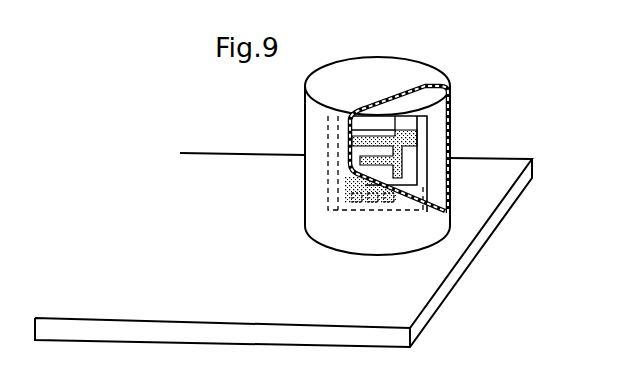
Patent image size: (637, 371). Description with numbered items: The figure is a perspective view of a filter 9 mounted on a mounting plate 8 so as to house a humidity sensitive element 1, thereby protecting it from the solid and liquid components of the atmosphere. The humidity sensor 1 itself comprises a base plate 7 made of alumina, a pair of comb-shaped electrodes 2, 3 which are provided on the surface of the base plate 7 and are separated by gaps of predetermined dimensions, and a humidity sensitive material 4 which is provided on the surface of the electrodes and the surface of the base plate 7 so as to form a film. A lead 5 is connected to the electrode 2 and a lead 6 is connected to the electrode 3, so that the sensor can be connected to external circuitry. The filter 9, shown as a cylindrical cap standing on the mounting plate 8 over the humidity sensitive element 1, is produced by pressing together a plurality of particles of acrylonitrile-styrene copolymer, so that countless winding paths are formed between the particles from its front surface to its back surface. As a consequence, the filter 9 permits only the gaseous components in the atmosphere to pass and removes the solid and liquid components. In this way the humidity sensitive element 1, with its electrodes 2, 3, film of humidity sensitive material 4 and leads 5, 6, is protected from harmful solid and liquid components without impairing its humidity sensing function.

The humidity sensor 1 is at (418, 116).
The comb-shaped electrode 2 is at (376, 131).
The comb-shaped electrode 3 is at (410, 165).
The humidity sensitive material 4 is at (417, 138).
The lead 5 is at (352, 223).
The lead 6 is at (408, 223).
The base plate 7 is at (399, 149).
The mounting plate 8 is at (420, 302).
The filter 9 is at (402, 61).